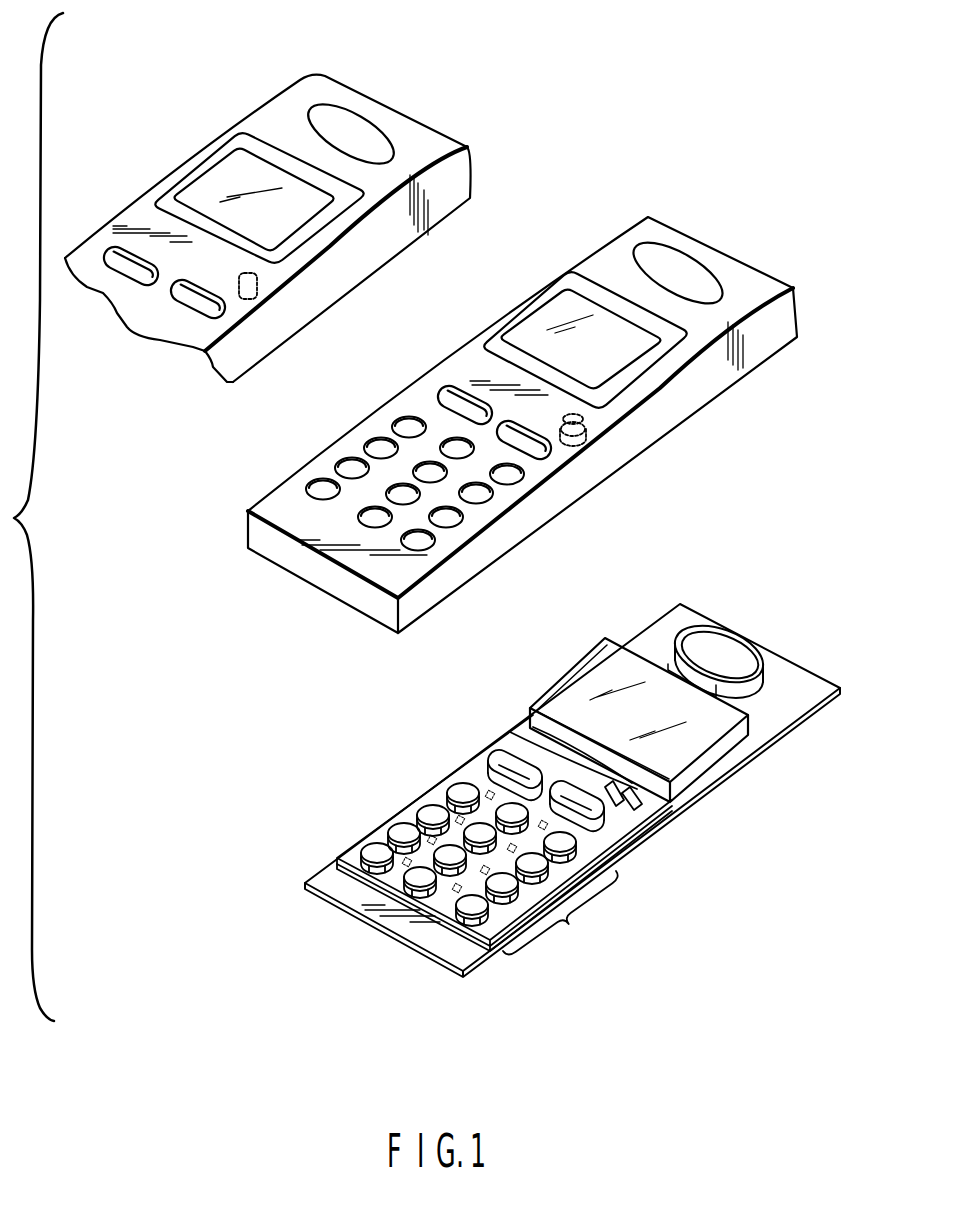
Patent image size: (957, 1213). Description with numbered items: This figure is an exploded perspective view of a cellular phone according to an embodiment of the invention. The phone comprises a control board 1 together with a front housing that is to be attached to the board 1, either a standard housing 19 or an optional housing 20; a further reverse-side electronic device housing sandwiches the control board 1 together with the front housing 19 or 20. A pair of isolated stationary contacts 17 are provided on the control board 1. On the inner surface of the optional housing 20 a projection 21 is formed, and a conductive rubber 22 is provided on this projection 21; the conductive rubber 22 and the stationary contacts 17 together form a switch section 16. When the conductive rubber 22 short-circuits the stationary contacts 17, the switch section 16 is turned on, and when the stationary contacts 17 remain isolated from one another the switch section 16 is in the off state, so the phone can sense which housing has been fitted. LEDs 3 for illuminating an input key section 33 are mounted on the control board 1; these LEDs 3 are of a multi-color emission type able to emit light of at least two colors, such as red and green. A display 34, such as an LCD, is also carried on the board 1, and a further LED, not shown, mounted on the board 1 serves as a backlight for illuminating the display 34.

The control board 1 is at (780, 658).
The LEDs 3 is at (483, 790).
The switch section 16 is at (528, 732).
The stationary contacts 17 is at (662, 825).
The standard housing 19 is at (266, 102).
The optional housing 20 is at (728, 242).
The projection 21 is at (260, 290).
The conductive rubber 22 is at (575, 443).
The input key section 33 is at (560, 912).
The display 34 is at (712, 733).